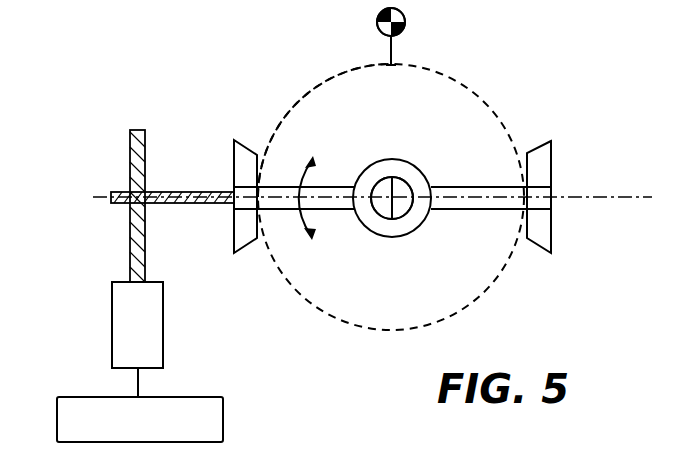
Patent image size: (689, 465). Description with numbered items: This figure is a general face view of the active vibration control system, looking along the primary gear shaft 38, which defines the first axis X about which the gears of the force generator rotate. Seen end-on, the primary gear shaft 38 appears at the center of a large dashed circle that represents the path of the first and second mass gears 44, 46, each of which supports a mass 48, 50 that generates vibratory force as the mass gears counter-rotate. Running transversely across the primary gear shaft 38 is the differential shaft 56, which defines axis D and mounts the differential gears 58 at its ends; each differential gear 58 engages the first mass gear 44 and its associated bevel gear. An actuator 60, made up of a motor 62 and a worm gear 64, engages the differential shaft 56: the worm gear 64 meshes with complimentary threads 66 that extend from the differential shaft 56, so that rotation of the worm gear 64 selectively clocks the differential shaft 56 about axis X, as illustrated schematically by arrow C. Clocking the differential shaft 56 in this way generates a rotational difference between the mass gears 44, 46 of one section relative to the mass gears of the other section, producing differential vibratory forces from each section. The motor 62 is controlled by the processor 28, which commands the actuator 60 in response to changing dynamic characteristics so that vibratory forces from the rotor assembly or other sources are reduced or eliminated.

The processor 28 is at (226, 420).
The primary gear shaft 38 is at (400, 168).
The first mass gear 44 is at (482, 93).
The second mass gear 46 is at (324, 130).
The mass 48 is at (406, 13).
The mass 50 is at (391, 22).
The differential shaft 56 is at (483, 209).
The differential gear 58 is at (254, 151).
The actuator 60 is at (88, 298).
The motor 62 is at (128, 320).
The worm gear 64 is at (130, 236).
The complimentary threads 66 is at (161, 192).
The first axis X is at (383, 192).
The arrow C is at (310, 222).
The differential shaft axis D is at (623, 204).